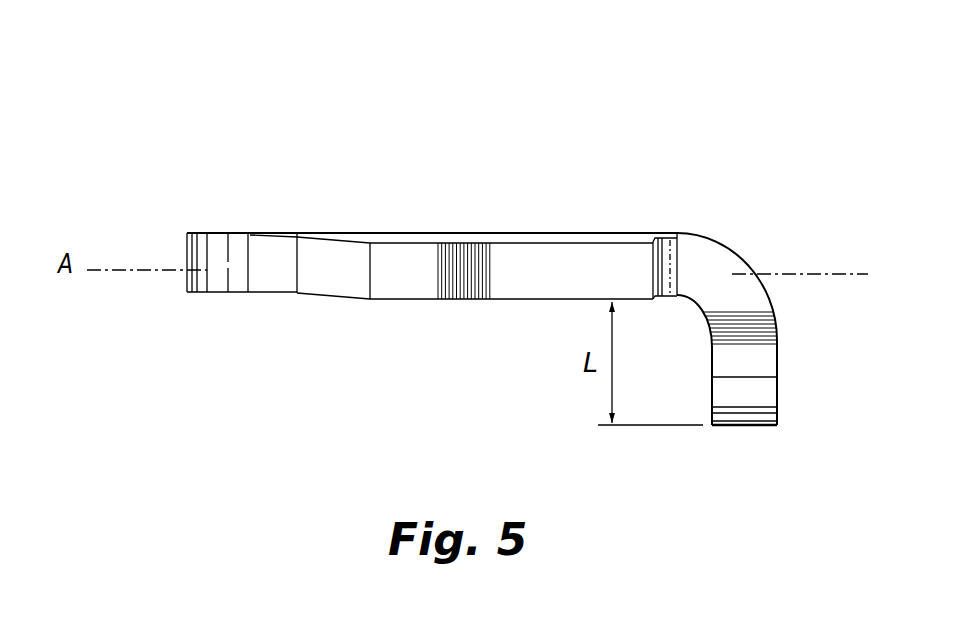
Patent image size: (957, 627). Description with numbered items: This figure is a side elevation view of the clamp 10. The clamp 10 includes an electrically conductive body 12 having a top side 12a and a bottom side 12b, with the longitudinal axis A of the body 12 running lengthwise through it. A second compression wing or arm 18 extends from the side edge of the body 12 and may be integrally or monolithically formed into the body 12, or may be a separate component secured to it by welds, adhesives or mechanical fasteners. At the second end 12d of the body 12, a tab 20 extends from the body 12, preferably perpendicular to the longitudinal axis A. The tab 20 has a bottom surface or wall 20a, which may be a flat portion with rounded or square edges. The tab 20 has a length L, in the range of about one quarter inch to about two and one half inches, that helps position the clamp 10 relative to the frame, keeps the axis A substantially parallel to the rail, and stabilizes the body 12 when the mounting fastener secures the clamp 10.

The clamp 10 is at (571, 155).
The electrically conductive body 12 is at (335, 229).
The top side 12a is at (228, 232).
The bottom side 12b is at (228, 294).
The second end 12d is at (184, 250).
The second compression wing or arm 18 is at (406, 304).
The tab 20 is at (790, 371).
The bottom surface or wall 20a is at (743, 426).